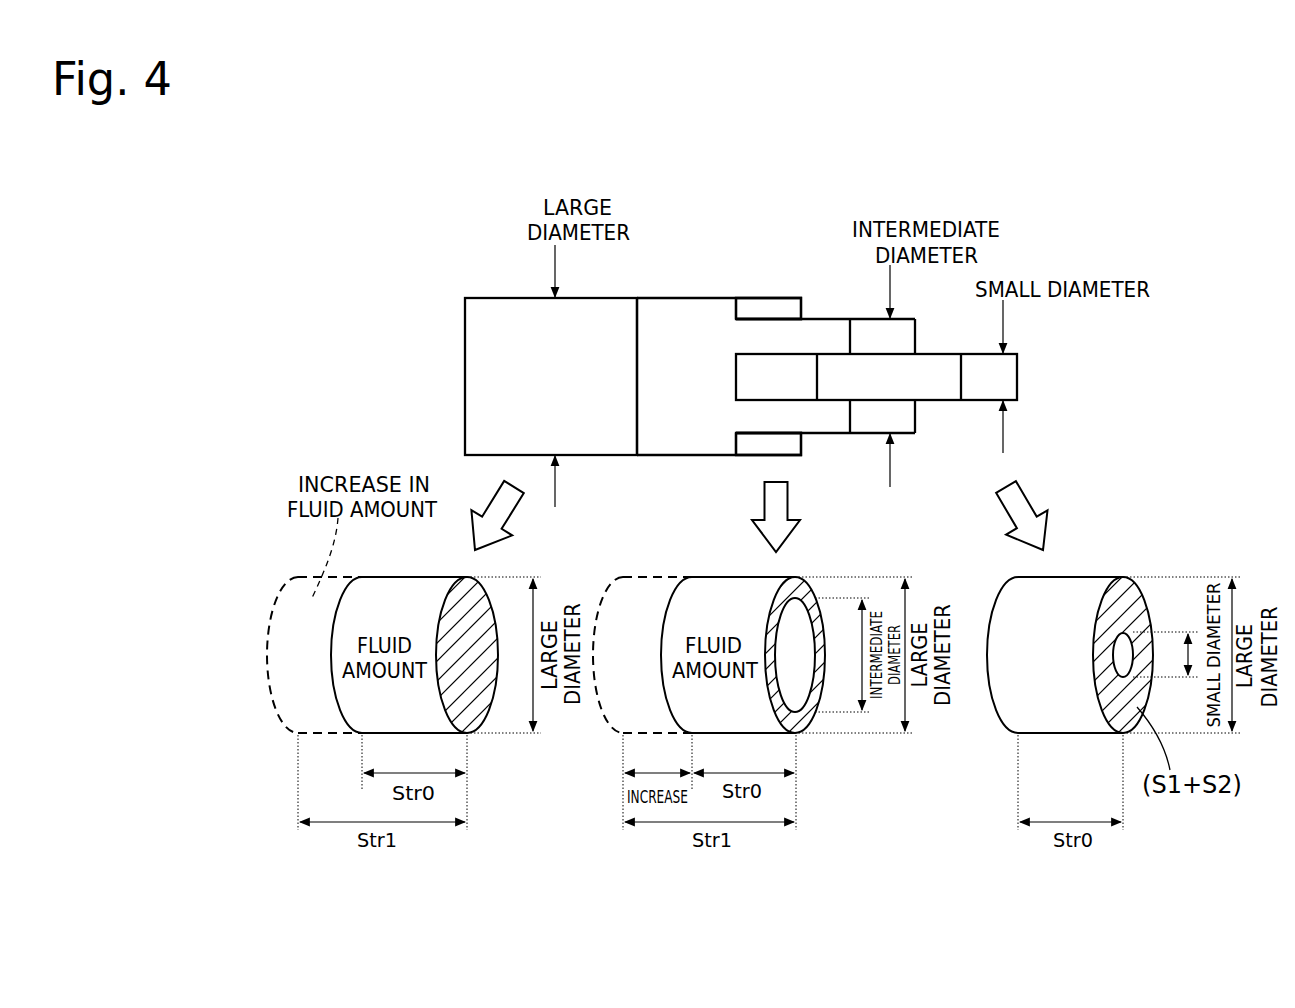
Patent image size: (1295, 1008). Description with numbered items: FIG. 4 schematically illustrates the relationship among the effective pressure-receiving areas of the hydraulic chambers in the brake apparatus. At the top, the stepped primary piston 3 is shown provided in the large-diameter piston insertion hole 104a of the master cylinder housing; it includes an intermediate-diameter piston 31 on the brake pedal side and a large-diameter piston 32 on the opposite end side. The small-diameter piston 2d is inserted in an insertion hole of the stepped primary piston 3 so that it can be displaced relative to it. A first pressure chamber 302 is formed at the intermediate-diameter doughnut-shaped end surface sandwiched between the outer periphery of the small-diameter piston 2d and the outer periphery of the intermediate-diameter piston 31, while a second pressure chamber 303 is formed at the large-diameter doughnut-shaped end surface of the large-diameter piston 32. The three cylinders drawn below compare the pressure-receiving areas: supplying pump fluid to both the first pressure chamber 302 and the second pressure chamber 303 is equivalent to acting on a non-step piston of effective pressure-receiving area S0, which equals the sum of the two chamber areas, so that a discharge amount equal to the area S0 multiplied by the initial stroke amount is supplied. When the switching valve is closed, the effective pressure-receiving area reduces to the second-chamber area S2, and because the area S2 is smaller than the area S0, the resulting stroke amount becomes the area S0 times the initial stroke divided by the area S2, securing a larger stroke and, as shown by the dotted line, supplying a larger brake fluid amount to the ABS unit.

The large-diameter piston insertion hole 104a is at (519, 302).
The stepped primary piston 3 is at (686, 290).
The second pressure chamber 303 is at (770, 308).
The intermediate-diameter piston 31 is at (817, 333).
The small-diameter piston 2d is at (893, 373).
The first pressure chamber 302 is at (902, 418).
The large-diameter piston 32 is at (688, 435).
The effective pressure-receiving area S0 is at (477, 688).
The effective pressure-receiving area S2 is at (802, 720).